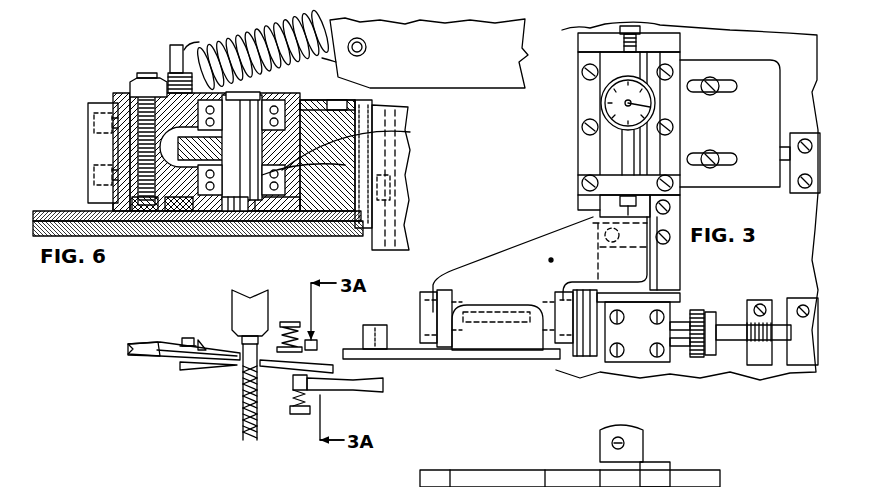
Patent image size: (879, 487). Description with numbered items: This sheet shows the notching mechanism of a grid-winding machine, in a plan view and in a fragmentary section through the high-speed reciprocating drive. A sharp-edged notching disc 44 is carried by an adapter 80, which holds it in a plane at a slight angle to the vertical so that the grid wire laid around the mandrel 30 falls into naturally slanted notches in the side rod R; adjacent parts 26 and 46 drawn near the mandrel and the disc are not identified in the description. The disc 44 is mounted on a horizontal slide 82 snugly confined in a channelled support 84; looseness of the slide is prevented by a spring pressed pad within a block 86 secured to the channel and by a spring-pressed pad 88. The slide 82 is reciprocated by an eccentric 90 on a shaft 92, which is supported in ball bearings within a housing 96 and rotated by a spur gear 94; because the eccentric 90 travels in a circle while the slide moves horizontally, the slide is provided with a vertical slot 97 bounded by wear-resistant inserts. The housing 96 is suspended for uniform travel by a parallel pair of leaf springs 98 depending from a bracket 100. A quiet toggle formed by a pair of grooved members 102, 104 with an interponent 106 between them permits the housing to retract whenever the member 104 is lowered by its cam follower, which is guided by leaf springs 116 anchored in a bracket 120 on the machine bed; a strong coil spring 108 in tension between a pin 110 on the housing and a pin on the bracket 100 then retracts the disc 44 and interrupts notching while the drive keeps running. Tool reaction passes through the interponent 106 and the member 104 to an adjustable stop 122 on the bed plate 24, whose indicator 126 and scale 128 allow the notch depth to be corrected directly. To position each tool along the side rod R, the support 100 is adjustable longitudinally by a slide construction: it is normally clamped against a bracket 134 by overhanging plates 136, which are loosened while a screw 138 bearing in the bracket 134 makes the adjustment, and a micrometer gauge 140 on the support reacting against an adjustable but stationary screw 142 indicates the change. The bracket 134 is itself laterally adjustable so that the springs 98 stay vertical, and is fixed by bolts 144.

In FIG. 3, the bed plate 24 is at (817, 265).
In FIG. 3, the spindle head 26 is at (267, 314).
In FIG. 3, the mandrel 30 is at (242, 388).
In FIG. 3, the notching disc 44 is at (195, 370).
In FIG. 3, the spring assembly 46 is at (278, 384).
In FIG. 3, the adapter 80 is at (210, 350).
In FIG. 6, the horizontal slide 82 is at (57, 210).
In FIG. 3, the horizontal slide 82 is at (345, 350).
In FIG. 6, the channelled support 84 is at (197, 237).
In FIG. 3, the channelled support 84 is at (388, 362).
In FIG. 3, the block 86 is at (383, 325).
In FIG. 6, the spring-pressed pad 88 is at (150, 213).
In FIG. 6, the eccentric 90 is at (240, 212).
In FIG. 6, the shaft 92 is at (241, 151).
In FIG. 6, the spur gear 94 is at (406, 132).
In FIG. 3, the spur gear 94 is at (515, 475).
In FIG. 6, the housing 96 is at (318, 80).
In FIG. 3, the housing 96 is at (490, 343).
In FIG. 6, the vertical slot 97 is at (262, 215).
In FIG. 6, the leaf springs 98 is at (100, 150).
In FIG. 3, the leaf springs 98 is at (440, 290).
In FIG. 6, the bracket 100 is at (482, 67).
In FIG. 3, the bracket 100 is at (588, 256).
In FIG. 6, the grooved member 102 is at (400, 205).
In FIG. 3, the grooved member 102 is at (556, 360).
In FIG. 3, the grooved member 104 is at (642, 362).
In FIG. 6, the interponent 106 is at (395, 250).
In FIG. 3, the interponent 106 is at (581, 360).
In FIG. 6, the coil spring 108 is at (259, 68).
In FIG. 6, the pin 110 is at (184, 44).
In FIG. 3, the leaf springs 116 is at (657, 272).
In FIG. 3, the bracket 120 is at (681, 208).
In FIG. 3, the adjustable stop 122 is at (728, 352).
In FIG. 3, the indicator 126 is at (690, 350).
In FIG. 3, the scale 128 is at (705, 358).
In FIG. 3, the bracket 134 is at (766, 140).
In FIG. 3, the overhanging plates 136 is at (581, 96).
In FIG. 3, the screw 138 is at (580, 32).
In FIG. 3, the micrometer gauge 140 is at (599, 88).
In FIG. 3, the screw 142 is at (598, 213).
In FIG. 3, the bolts 144 is at (732, 55).
In FIG. 3, the side rod R is at (242, 420).